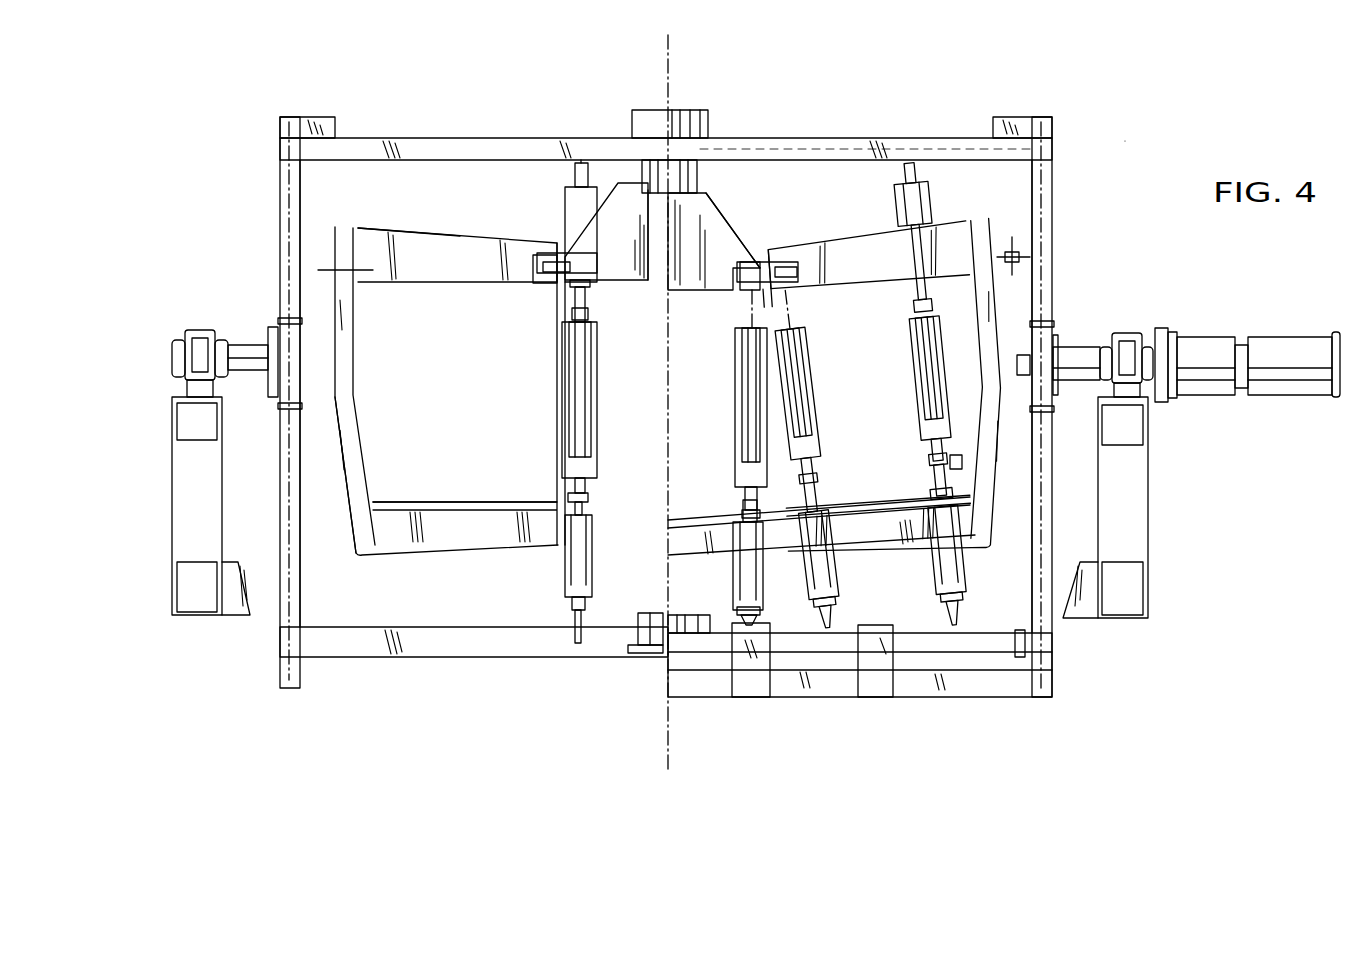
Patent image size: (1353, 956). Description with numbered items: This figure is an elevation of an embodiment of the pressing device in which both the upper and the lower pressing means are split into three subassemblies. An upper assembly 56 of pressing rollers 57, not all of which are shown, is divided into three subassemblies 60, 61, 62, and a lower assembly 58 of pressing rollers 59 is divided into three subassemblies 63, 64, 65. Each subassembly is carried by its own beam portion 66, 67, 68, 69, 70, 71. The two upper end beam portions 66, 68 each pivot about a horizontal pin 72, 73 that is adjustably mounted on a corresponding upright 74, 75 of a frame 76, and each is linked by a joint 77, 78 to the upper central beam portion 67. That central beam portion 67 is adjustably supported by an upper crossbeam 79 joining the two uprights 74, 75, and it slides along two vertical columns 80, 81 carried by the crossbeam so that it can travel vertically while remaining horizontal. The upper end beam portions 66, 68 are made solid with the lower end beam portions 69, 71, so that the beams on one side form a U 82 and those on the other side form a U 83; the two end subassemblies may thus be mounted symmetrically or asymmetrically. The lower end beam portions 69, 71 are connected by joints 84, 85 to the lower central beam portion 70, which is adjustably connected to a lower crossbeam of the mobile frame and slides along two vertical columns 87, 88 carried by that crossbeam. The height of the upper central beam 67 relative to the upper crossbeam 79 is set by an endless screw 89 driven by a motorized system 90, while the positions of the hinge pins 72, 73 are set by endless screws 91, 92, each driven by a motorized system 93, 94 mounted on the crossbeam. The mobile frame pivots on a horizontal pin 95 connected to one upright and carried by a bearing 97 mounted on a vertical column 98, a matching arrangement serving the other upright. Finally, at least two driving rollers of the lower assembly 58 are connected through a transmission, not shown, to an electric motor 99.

The upper assembly 56 is at (953, 313).
The pressing rollers 57 is at (935, 322).
The lower assembly 58 is at (952, 463).
The pressing rollers 59 is at (920, 405).
The subassembly 60 is at (482, 350).
The subassembly 61 is at (697, 333).
The subassembly 62 is at (843, 307).
The subassembly 63 is at (430, 443).
The subassembly 64 is at (640, 473).
The subassembly 65 is at (862, 487).
The upper end beam portion 66 is at (393, 228).
The upper central beam portion 67 is at (620, 190).
The upper end beam portion 68 is at (825, 240).
The lower end beam portion 69 is at (1080, 350).
The lower central beam portion 70 is at (710, 640).
The lower end beam portion 71 is at (905, 540).
The horizontal pin 72 is at (318, 270).
The horizontal pin 73 is at (1012, 253).
The upright 74 is at (290, 197).
The upright 75 is at (1052, 190).
The frame 76 is at (962, 150).
The joint 77 is at (560, 250).
The joint 78 is at (752, 272).
The upper crossbeam 79 is at (907, 140).
The vertical column 80 is at (640, 192).
The vertical column 81 is at (706, 198).
The U 82 is at (352, 510).
The U 83 is at (975, 548).
The joint 84 is at (560, 532).
The joint 85 is at (768, 520).
The vertical column 87 is at (643, 632).
The vertical column 88 is at (688, 613).
The endless screw 89 is at (683, 112).
The motorized system 90 is at (655, 108).
The endless screw 91 is at (283, 148).
The endless screw 92 is at (1050, 155).
The motorized system 93 is at (312, 125).
The motorized system 94 is at (1030, 118).
The horizontal pin 95 is at (242, 375).
The bearing 97 is at (195, 335).
The vertical column 98 is at (182, 485).
The electric motor 99 is at (1275, 335).